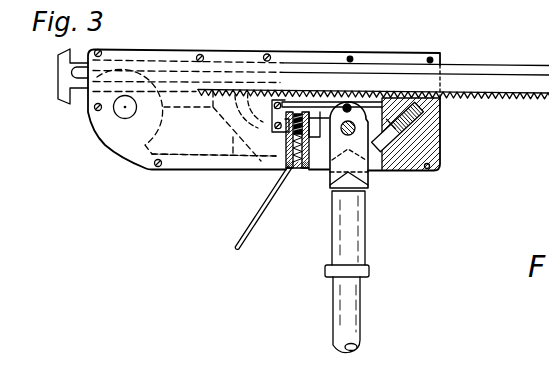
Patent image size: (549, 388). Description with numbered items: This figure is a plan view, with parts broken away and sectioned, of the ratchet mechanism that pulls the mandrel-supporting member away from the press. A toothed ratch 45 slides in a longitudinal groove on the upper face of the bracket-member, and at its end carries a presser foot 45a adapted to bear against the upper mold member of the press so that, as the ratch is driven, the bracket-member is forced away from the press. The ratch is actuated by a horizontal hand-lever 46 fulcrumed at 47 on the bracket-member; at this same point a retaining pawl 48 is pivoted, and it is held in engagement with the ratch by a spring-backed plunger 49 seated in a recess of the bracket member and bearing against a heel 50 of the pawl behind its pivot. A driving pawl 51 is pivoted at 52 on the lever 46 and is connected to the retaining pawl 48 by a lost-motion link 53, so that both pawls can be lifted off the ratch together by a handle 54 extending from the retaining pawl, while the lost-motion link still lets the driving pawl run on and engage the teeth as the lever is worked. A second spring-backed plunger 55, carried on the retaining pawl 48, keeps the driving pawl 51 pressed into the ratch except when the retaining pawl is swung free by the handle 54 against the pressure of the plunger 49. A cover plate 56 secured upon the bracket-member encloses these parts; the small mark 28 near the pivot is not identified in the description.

The ratch 45 is at (482, 72).
The presser foot 45a is at (58, 86).
The hand-lever 46 is at (345, 237).
The fulcrum 47 is at (328, 147).
The retaining pawl 48 is at (236, 152).
The spring-backed plunger 49 is at (398, 169).
The heel 50 is at (371, 152).
The driving pawl 51 is at (302, 110).
The pivot 52 is at (333, 116).
The lost-motion link 53 is at (271, 119).
The handle 54 is at (260, 218).
The spring-backed plunger 55 is at (289, 131).
The cover plate 56 is at (168, 51).
The pivot 28 is at (347, 118).